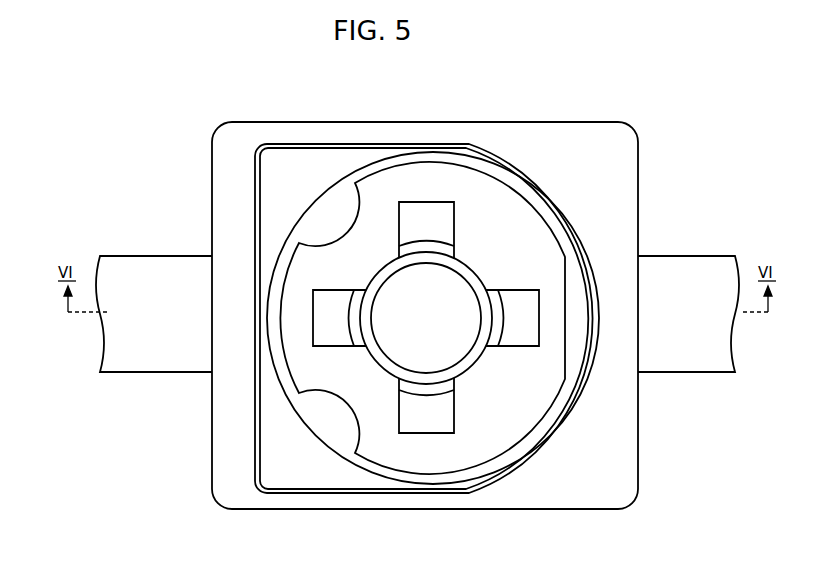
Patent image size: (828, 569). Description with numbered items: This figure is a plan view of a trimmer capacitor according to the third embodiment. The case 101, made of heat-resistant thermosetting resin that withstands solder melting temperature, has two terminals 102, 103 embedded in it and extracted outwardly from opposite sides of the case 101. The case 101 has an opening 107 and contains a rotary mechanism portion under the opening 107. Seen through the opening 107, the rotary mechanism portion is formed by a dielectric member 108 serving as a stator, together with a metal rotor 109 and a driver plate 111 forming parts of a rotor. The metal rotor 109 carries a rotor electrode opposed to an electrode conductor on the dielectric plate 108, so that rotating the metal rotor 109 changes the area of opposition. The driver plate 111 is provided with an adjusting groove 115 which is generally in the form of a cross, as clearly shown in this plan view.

The case 101 is at (644, 156).
The terminal 102 is at (148, 268).
The terminal 103 is at (685, 270).
The opening 107 is at (297, 145).
The dielectric member 108 is at (300, 462).
The metal rotor 109 is at (313, 410).
The driver plate 111 is at (500, 208).
The adjusting groove 115 is at (427, 212).